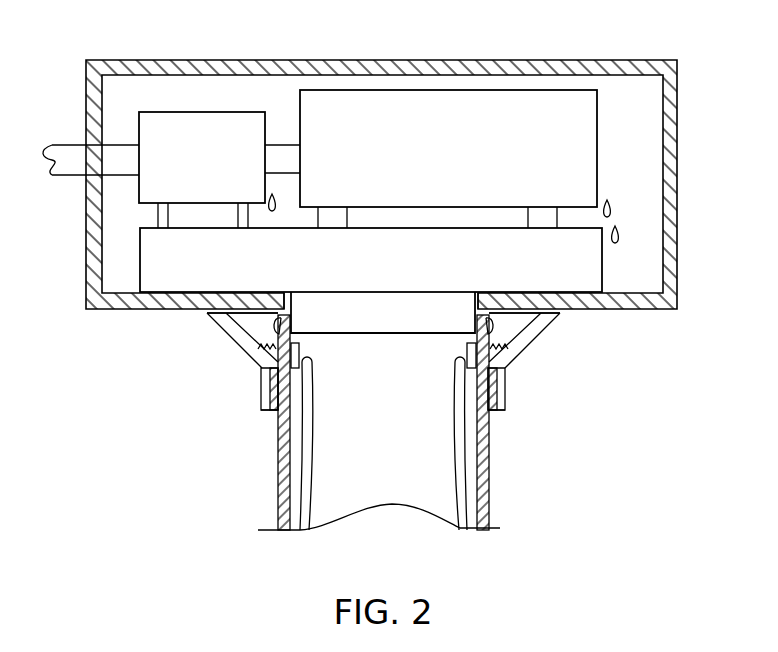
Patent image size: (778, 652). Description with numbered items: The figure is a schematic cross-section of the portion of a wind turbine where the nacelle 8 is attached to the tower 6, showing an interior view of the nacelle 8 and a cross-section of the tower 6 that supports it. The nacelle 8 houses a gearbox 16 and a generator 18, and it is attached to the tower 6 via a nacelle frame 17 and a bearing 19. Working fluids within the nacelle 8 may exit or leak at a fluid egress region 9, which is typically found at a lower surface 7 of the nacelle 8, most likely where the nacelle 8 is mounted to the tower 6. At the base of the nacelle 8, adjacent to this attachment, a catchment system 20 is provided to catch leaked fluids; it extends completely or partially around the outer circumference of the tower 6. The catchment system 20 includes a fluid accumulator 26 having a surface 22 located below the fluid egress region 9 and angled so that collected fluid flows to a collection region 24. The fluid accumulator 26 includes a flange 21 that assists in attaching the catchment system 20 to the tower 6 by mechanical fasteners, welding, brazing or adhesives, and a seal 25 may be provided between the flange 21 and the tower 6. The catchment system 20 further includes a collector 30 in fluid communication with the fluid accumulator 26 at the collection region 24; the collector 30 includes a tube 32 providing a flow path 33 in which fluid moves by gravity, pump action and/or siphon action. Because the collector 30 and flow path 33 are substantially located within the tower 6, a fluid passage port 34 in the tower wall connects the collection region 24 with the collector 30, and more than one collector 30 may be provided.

The tower 6 is at (278, 489).
The lower surface 7 is at (649, 310).
The nacelle 8 is at (397, 58).
The fluid egress region 9 is at (284, 297).
The gearbox 16 is at (188, 168).
The nacelle frame 17 is at (358, 268).
The generator 18 is at (436, 157).
The bearing 19 is at (371, 322).
The catchment system 20 is at (216, 392).
The flange 21 is at (505, 410).
The surface 22 is at (518, 331).
The collection region 24 is at (499, 362).
The seal 25 is at (273, 410).
The fluid accumulator 26 is at (239, 342).
The collector 30 is at (314, 424).
The tube 32 is at (311, 475).
The flow path 33 is at (307, 519).
The fluid passage port 34 is at (268, 367).